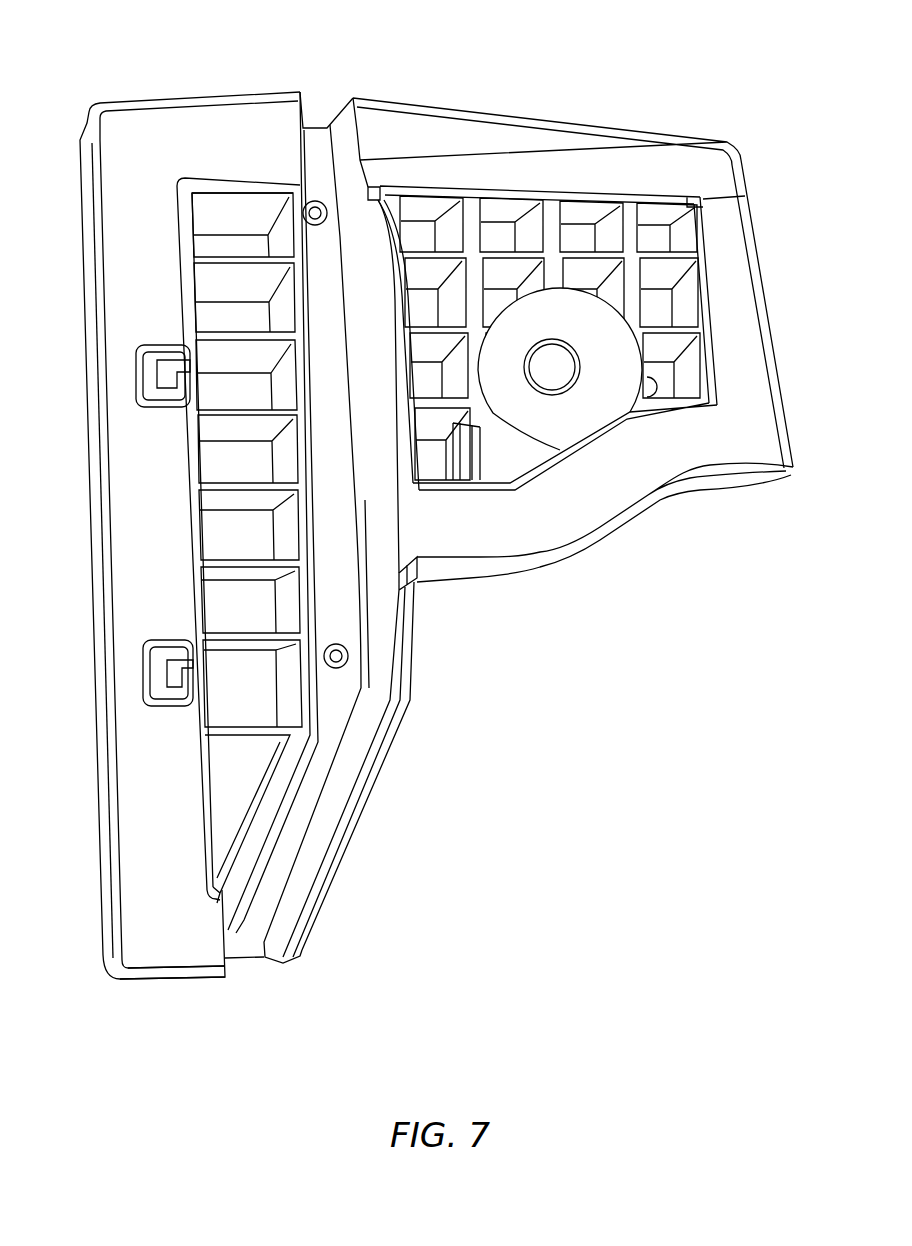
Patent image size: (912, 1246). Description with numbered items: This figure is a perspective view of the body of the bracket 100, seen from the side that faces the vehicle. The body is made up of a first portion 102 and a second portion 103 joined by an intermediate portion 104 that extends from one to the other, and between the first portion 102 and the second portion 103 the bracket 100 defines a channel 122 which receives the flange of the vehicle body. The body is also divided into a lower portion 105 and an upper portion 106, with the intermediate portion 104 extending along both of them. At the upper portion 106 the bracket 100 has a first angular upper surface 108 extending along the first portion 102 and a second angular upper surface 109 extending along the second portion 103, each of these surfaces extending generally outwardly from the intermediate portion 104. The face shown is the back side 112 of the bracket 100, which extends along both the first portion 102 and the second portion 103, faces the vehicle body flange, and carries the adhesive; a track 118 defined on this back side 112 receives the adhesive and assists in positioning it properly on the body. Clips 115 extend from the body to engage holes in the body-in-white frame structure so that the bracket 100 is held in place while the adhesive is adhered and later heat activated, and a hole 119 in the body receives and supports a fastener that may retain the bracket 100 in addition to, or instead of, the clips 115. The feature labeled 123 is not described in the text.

The bracket 100 is at (718, 70).
The first portion 102 is at (176, 72).
The second portion 103 is at (552, 100).
The intermediate portion 104 is at (320, 100).
The lower portion 105 is at (200, 1000).
The upper portion 106 is at (778, 224).
The first angular upper surface 108 is at (122, 100).
The second angular upper surface 109 is at (456, 112).
The back side 112 is at (450, 530).
The clips 115 is at (152, 665).
The track 118 is at (160, 848).
The hole 119 is at (550, 393).
The channel 122 is at (345, 527).
The bottom flange 123 is at (636, 703).